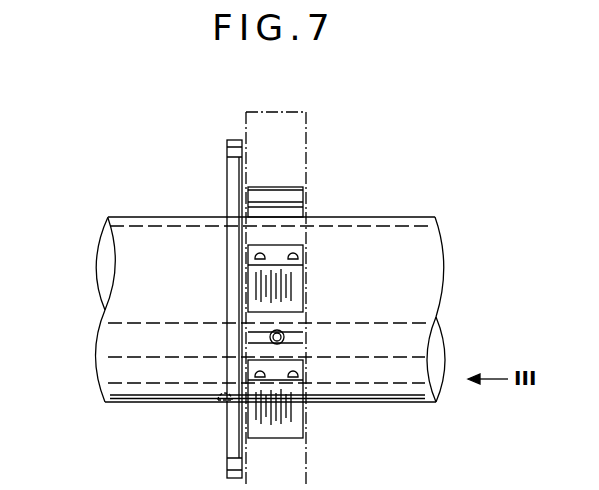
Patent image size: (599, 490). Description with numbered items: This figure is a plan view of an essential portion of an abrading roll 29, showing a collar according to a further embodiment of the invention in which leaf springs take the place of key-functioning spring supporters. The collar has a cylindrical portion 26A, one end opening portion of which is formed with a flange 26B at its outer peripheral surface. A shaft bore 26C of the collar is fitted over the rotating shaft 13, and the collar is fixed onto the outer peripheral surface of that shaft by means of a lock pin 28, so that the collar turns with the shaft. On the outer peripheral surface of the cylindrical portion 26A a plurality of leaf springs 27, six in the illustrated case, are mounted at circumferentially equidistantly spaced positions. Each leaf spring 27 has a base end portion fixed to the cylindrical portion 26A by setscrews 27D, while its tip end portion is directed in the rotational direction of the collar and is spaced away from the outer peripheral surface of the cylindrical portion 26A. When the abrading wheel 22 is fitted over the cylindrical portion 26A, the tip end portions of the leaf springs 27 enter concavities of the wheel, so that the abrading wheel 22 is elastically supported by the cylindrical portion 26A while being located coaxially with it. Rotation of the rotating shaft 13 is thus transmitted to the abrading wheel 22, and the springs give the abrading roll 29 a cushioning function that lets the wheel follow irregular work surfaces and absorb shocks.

The rotating shaft 13 is at (162, 216).
The abrading wheel 22 is at (306, 113).
The cylindrical portion 26A is at (310, 212).
The flange 26B is at (228, 150).
The shaft bore 26C is at (220, 400).
The leaf spring 27 is at (292, 288).
The setscrew 27D is at (300, 257).
The lock pin 28 is at (269, 339).
The abrading roll 29 is at (397, 188).